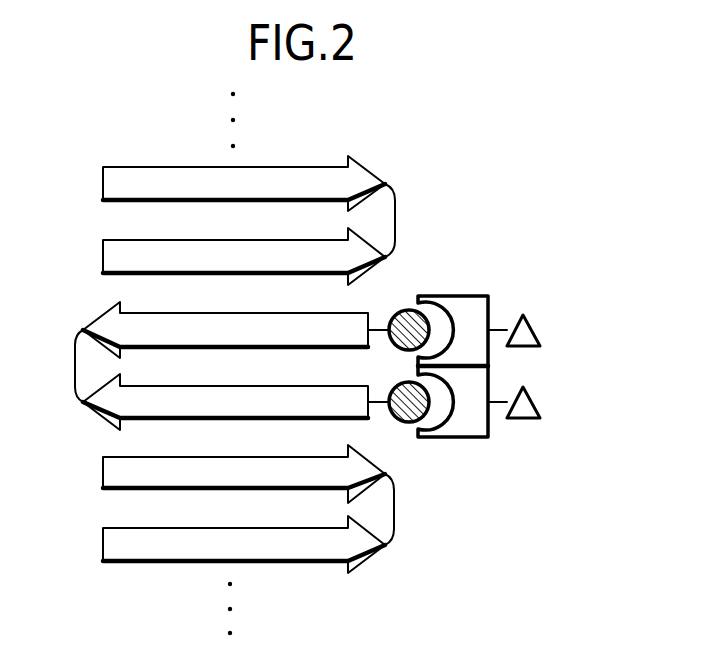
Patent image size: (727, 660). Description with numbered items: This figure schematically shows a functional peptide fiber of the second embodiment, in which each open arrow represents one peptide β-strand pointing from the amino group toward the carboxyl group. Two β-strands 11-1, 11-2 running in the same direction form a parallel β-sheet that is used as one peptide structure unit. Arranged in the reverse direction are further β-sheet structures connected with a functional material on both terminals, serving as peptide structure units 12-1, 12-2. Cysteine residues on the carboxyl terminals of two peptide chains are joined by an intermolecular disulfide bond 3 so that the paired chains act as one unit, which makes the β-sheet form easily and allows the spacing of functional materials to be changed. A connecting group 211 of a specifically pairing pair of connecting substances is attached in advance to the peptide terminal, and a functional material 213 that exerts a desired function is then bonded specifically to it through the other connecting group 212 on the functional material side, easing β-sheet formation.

The β-strand 11-1 is at (115, 167).
The β-strand 11-2 is at (103, 251).
The peptide structure unit 12-1 is at (98, 320).
The peptide structure unit 12-2 is at (98, 410).
The intermolecular disulfide bond 3 is at (397, 212).
The connecting group 211 is at (403, 300).
The connecting group 212 is at (453, 297).
The functional material 213 is at (530, 328).